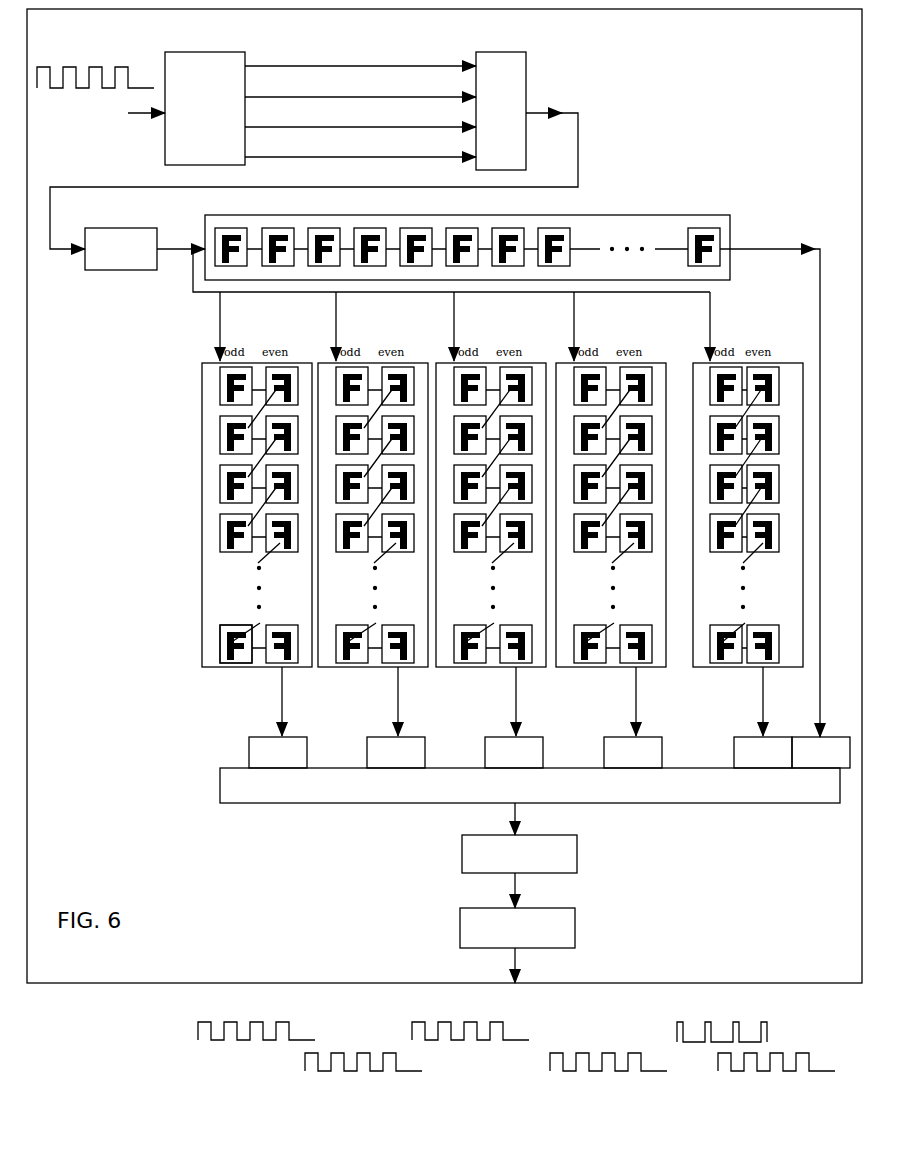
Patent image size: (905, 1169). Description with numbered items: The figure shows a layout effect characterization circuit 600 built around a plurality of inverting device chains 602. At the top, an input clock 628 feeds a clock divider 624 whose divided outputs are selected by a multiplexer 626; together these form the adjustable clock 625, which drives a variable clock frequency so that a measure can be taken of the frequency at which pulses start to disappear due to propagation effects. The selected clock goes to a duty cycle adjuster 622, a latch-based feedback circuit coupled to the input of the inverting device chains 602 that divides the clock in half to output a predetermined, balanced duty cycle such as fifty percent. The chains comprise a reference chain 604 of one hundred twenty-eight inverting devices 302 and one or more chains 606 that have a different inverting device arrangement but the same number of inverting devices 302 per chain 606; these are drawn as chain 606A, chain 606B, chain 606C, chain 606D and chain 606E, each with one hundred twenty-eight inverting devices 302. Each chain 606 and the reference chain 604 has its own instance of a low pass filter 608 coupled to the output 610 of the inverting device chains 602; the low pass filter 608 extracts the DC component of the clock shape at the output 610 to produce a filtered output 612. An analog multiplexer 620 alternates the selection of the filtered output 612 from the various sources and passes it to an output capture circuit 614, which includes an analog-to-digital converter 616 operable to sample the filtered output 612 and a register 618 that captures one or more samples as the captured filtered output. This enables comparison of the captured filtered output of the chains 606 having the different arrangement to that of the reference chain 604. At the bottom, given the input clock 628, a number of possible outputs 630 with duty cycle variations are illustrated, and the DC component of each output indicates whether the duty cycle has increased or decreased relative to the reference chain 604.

The layout effect characterization circuit 600 is at (736, 93).
The inverting device chains 602 is at (173, 397).
The reference chain 604 is at (643, 215).
The chains 606 is at (449, 514).
The chain 606A is at (265, 341).
The chain 606B is at (380, 341).
The chain 606C is at (500, 341).
The chain 606D is at (618, 341).
The chain 606E is at (750, 341).
The low pass filter 608 is at (232, 737).
The output 610 is at (230, 682).
The filtered output 612 is at (518, 815).
The output capture circuit 614 is at (420, 898).
The analog-to-digital converter 616 is at (577, 862).
The register 618 is at (577, 928).
The analog multiplexer 620 is at (375, 805).
The duty cycle adjuster 622 is at (122, 273).
The clock divider 624 is at (165, 138).
The adjustable clock 625 is at (577, 82).
The multiplexer 626 is at (528, 80).
The input clock 628 is at (90, 92).
The possible outputs 630 is at (168, 1045).
The inverting devices 302 is at (212, 630).